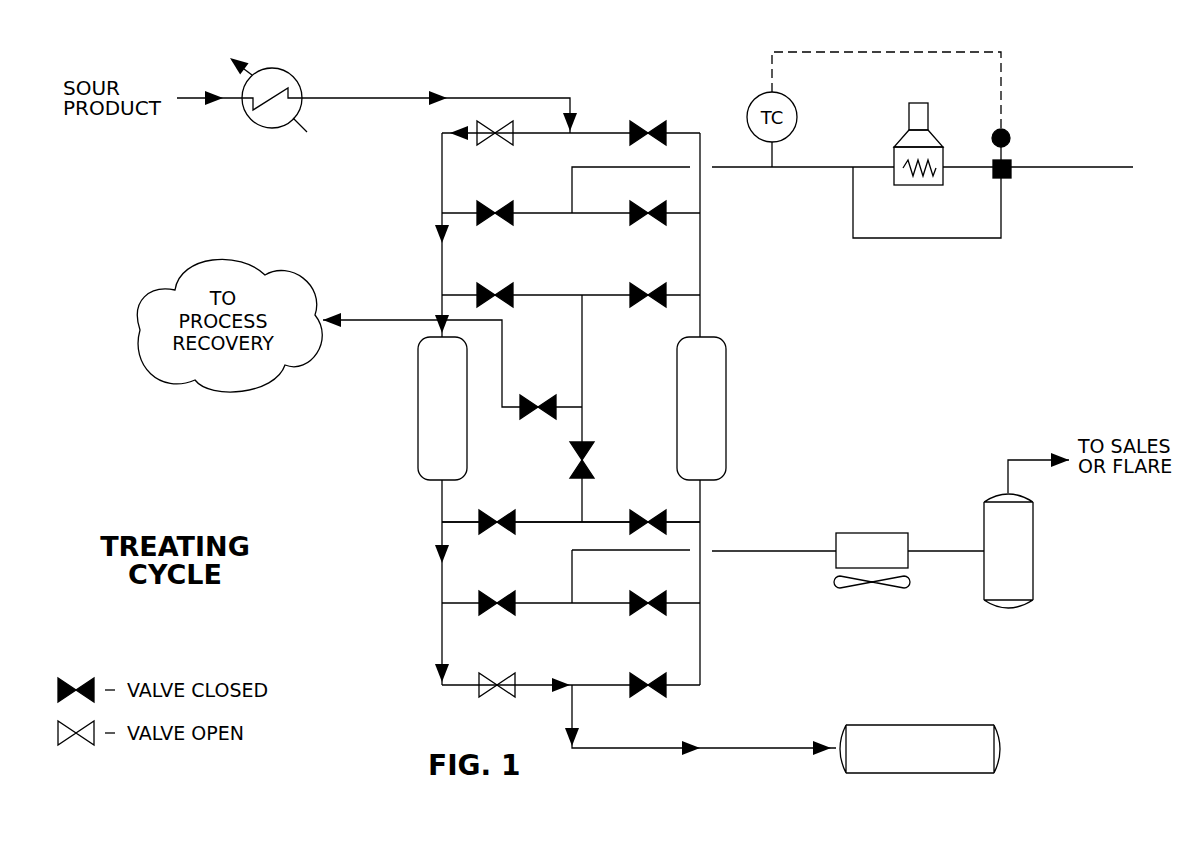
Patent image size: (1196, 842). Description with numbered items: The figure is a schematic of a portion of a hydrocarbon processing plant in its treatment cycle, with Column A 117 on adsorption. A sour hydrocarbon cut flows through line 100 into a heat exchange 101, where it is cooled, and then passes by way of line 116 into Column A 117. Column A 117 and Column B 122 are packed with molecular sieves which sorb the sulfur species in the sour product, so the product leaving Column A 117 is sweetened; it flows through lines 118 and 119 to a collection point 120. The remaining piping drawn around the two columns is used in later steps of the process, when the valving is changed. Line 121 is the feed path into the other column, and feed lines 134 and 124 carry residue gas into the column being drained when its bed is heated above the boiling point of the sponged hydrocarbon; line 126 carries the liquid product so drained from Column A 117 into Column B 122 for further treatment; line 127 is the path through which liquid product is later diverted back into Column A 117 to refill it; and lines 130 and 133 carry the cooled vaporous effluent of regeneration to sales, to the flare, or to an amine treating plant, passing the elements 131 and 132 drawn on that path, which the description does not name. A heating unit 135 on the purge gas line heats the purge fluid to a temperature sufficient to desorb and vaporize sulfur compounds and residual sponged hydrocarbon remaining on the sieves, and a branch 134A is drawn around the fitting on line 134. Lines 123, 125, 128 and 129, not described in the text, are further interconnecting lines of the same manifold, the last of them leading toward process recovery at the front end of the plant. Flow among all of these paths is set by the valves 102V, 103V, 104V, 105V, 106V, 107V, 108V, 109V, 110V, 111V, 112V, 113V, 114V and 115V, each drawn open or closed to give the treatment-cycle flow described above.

The line 100 is at (197, 94).
The heat exchange 101 is at (292, 72).
The valve (open) 102V is at (477, 127).
The valve (closed) 103V is at (653, 123).
The valve (closed) 104V is at (483, 203).
The valve (closed) 105V is at (657, 203).
The valve (closed) 106V is at (484, 290).
The valve (closed) 107V is at (662, 290).
The valve (closed) 108V is at (550, 415).
The valve (closed) 109V is at (592, 443).
The valve (closed) 110V is at (475, 507).
The valve (closed) 111V is at (667, 513).
The valve (closed) 112V is at (503, 593).
The valve (closed) 113V is at (660, 595).
The valve (open) 114V is at (503, 690).
The valve (closed) 115V is at (657, 692).
The line 116 is at (441, 188).
The Column A 117 is at (418, 393).
The line 118 is at (441, 582).
The line 119 is at (572, 705).
The collection point 120 is at (884, 725).
The line 121 is at (702, 202).
The column B 122 is at (725, 383).
The outlet line from column B 123 is at (705, 575).
The line 124 is at (600, 165).
The cross line 125 is at (543, 295).
The line 126 is at (582, 358).
The line 127 is at (572, 518).
The cross line 128 is at (560, 605).
The line to process recovery 129 is at (503, 332).
The line 130 is at (740, 550).
The cooler 131 is at (854, 533).
The separator vessel 132 is at (1033, 548).
The line 133 is at (1026, 458).
The feed line 134 is at (1023, 171).
The bypass line 134A is at (978, 170).
The heating unit 135 is at (894, 153).